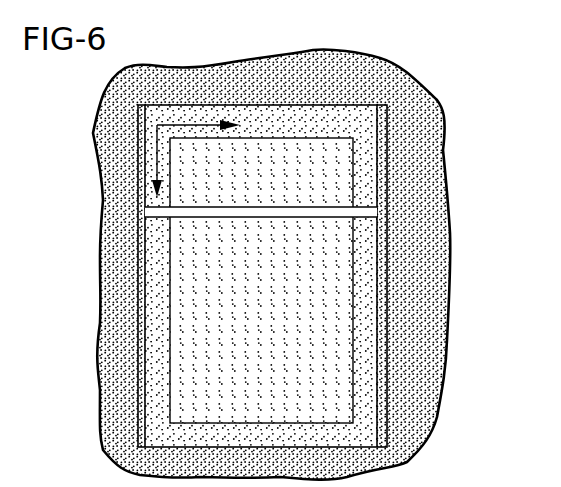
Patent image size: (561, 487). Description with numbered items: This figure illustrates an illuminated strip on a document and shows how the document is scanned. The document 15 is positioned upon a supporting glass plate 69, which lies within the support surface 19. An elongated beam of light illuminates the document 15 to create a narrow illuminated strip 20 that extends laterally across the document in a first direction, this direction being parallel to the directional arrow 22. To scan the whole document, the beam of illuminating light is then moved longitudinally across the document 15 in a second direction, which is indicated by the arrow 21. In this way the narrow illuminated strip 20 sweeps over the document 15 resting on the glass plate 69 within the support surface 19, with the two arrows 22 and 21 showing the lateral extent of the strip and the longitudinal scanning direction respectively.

The support surface 19 is at (337, 63).
The supporting glass plate 69 is at (353, 122).
The arrow 21 is at (147, 145).
The document 15 is at (325, 182).
The illuminated strip 20 is at (340, 212).
The directional arrow 22 is at (193, 127).